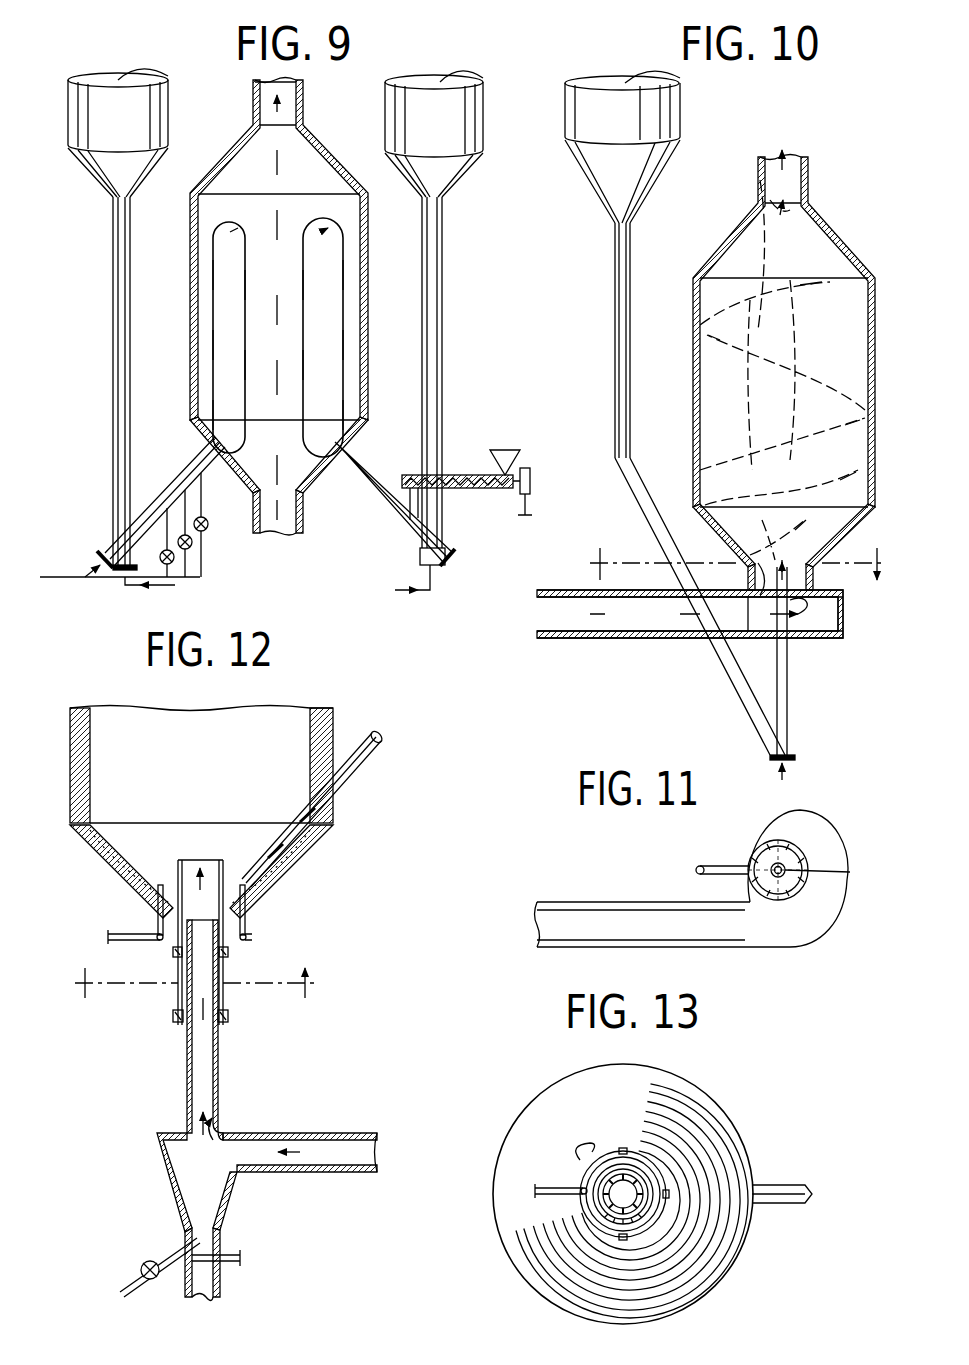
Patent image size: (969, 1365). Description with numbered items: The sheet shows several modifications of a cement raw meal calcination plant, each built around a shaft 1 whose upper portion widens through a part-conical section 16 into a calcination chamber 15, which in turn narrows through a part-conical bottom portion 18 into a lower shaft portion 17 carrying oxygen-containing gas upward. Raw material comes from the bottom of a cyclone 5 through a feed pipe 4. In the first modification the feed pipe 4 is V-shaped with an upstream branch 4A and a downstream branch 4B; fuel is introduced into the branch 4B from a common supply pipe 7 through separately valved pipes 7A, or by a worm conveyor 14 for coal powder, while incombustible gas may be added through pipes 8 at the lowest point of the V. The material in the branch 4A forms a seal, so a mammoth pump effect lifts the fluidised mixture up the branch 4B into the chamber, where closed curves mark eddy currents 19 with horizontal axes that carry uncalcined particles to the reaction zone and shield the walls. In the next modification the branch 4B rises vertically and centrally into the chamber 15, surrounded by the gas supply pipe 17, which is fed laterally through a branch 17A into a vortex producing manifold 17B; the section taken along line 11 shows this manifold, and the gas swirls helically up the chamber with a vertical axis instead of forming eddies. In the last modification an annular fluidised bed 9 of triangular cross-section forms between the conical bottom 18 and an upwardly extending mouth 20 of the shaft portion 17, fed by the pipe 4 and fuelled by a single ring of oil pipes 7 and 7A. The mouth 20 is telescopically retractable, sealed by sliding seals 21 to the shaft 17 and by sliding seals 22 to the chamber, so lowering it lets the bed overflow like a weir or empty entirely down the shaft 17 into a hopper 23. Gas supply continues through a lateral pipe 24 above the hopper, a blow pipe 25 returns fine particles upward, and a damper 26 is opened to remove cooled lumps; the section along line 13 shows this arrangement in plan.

In FIG. 9, the shaft 1 is at (300, 97).
In FIG. 10, the shaft 1 is at (808, 182).
In FIG. 12, the raw material feed pipe 4 is at (370, 757).
In FIG. 13, the raw material feed pipe 4 is at (791, 1190).
In FIG. 10, the upstream branch 4A is at (615, 360).
In FIG. 11, the upstream branch 4A is at (714, 866).
In FIG. 10, the downstream branch 4B is at (789, 676).
In FIG. 11, the downstream branch 4B is at (830, 871).
In FIG. 10, the cyclone 5 is at (665, 110).
In FIG. 9, the supply pipe 7 is at (58, 580).
In FIG. 10, the supply pipe 7 is at (788, 775).
In FIG. 12, the supply pipe 7 is at (129, 939).
In FIG. 13, the supply pipe 7 is at (545, 1176).
In FIG. 9, the fuel feed pipes 7A is at (206, 561).
In FIG. 12, the fuel feed pipes 7A is at (140, 895).
In FIG. 13, the fuel feed pipes 7A is at (588, 1158).
In FIG. 9, the supply pipe for fluidisation gas 8 is at (162, 586).
In FIG. 12, the annular fluidised bed 9 is at (142, 850).
In FIG. 10, the section line 11 is at (738, 552).
In FIG. 12, the section line 13 is at (198, 1001).
In FIG. 9, the worm conveyor 14 is at (480, 489).
In FIG. 10, the calcination chamber 15 is at (693, 360).
In FIG. 12, the calcination chamber 15 is at (333, 722).
In FIG. 13, the calcination chamber 15 is at (623, 1194).
In FIG. 9, the part-conical section 16 is at (233, 147).
In FIG. 10, the part-conical section 16 is at (744, 226).
In FIG. 9, the lower shaft portion 17 is at (303, 520).
In FIG. 10, the lower shaft portion 17 is at (816, 580).
In FIG. 11, the lower shaft portion 17 is at (798, 845).
In FIG. 12, the lower shaft portion 17 is at (220, 1073).
In FIG. 13, the lower shaft portion 17 is at (602, 1201).
In FIG. 10, the lateral branch 17A is at (625, 640).
In FIG. 11, the lateral branch 17A is at (652, 907).
In FIG. 10, the vortex producing manifold 17B is at (845, 618).
In FIG. 11, the vortex producing manifold 17B is at (832, 916).
In FIG. 9, the part-conical bottom portion 18 is at (308, 475).
In FIG. 10, the part-conical bottom portion 18 is at (727, 546).
In FIG. 12, the part-conical bottom portion 18 is at (304, 856).
In FIG. 9, the eddy currents 19 is at (345, 268).
In FIG. 12, the mouth 20 is at (228, 840).
In FIG. 13, the mouth 20 is at (634, 1176).
In FIG. 12, the sliding seals 21 is at (230, 1015).
In FIG. 12, the sliding seals 22 is at (230, 953).
In FIG. 12, the hopper 23 is at (162, 1184).
In FIG. 12, the lateral pipe 24 is at (326, 1133).
In FIG. 12, the blow pipe 25 is at (130, 1278).
In FIG. 12, the damper 26 is at (222, 1280).